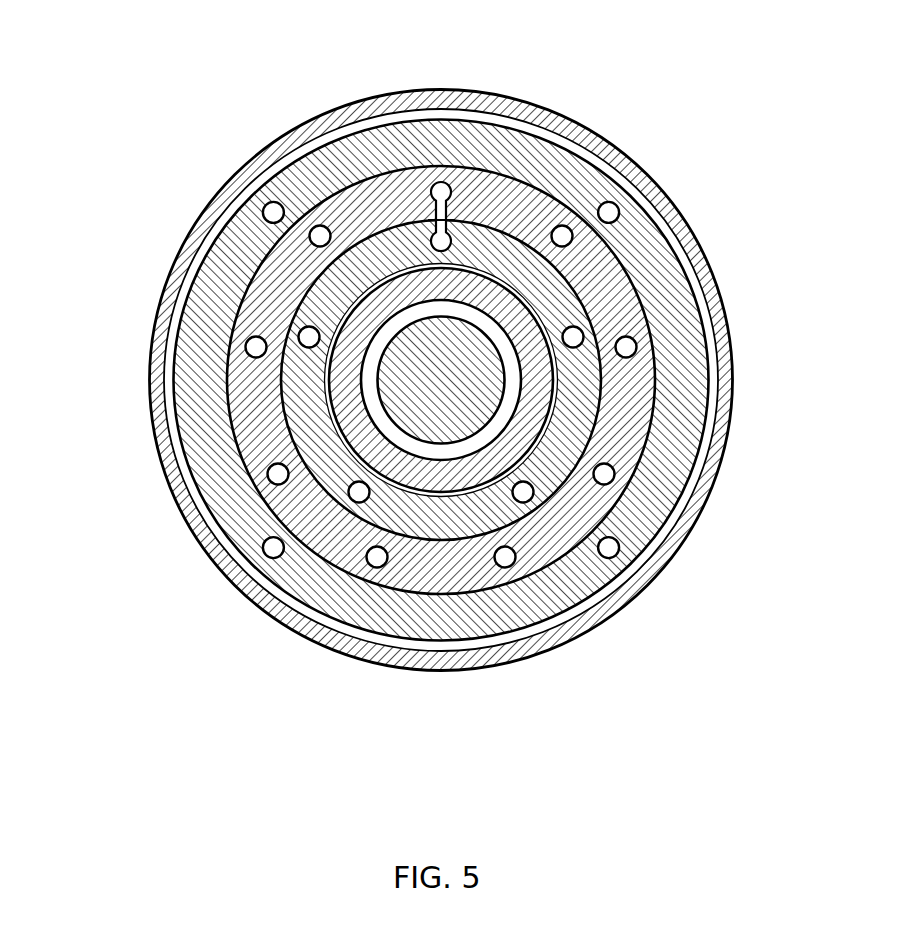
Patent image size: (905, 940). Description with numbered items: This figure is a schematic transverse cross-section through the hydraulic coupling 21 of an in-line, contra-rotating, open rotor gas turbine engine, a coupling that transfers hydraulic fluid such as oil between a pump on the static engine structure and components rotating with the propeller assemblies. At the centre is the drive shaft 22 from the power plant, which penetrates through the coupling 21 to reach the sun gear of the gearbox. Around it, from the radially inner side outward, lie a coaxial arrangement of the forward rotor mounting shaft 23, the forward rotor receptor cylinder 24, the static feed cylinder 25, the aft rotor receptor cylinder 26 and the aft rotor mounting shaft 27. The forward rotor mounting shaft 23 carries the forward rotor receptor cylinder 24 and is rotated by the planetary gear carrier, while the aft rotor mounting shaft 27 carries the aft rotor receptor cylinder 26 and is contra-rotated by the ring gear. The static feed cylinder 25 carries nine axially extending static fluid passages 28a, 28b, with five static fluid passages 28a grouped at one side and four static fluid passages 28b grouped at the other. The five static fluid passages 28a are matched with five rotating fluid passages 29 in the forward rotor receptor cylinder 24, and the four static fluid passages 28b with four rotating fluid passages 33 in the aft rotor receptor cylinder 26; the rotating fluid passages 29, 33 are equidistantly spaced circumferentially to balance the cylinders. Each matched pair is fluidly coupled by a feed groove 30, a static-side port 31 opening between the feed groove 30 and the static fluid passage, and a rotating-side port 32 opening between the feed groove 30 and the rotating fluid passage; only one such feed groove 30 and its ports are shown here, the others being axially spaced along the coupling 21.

The hydraulic coupling 21 is at (238, 130).
The drive shaft 22 is at (455, 378).
The forward rotor mounting shaft 23 is at (343, 390).
The forward rotor receptor cylinder 24 is at (302, 378).
The static feed cylinder 25 is at (522, 398).
The aft rotor receptor cylinder 26 is at (357, 637).
The aft rotor mounting shaft 27 is at (418, 662).
The static fluid passages 28a is at (562, 236).
The static fluid passages 28b is at (276, 475).
The rotating fluid passages 29 is at (362, 603).
The feed groove 30 is at (582, 292).
The static-side port 31 is at (440, 188).
The rotating-side port 32 is at (378, 175).
The rotating fluid passages 33 is at (273, 213).